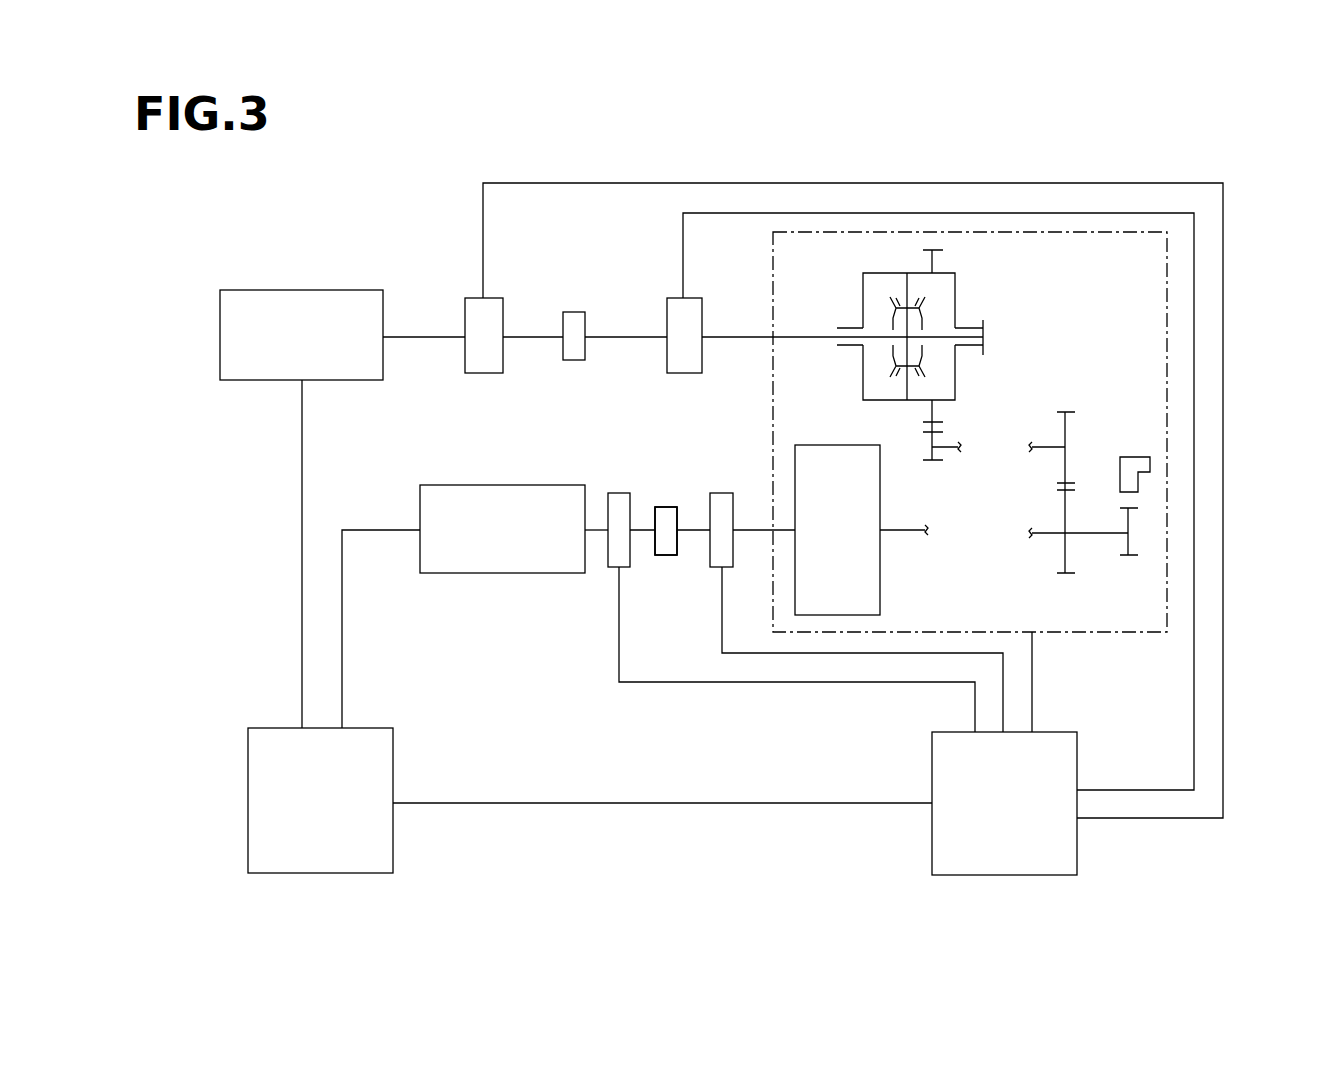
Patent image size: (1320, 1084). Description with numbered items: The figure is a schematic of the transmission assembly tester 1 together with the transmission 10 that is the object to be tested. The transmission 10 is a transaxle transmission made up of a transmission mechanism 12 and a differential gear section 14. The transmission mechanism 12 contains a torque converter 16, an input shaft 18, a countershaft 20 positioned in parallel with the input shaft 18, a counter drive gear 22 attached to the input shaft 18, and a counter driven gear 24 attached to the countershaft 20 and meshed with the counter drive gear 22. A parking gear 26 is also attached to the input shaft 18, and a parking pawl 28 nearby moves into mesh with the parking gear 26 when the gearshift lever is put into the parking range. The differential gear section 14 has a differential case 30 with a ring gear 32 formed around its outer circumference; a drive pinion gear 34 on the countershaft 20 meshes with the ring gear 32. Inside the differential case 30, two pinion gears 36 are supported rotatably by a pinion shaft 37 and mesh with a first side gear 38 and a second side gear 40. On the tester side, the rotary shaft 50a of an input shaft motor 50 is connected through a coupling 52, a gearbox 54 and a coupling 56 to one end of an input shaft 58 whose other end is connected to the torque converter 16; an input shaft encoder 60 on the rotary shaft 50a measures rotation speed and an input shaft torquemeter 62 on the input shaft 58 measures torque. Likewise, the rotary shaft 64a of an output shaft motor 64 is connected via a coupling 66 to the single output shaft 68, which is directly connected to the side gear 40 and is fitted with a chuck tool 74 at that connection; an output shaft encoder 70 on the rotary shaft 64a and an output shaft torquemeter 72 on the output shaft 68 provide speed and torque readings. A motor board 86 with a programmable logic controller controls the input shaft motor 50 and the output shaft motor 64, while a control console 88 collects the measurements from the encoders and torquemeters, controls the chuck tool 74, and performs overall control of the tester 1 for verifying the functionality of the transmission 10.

The transmission assembly tester 1 is at (328, 213).
The transmission 10 is at (1167, 360).
The transmission mechanism 12 is at (1071, 590).
The differential gear section 14 is at (868, 264).
The torque converter 16 is at (882, 572).
The input shaft 18 is at (894, 530).
The countershaft 20 is at (960, 447).
The counter drive gear 22 is at (1070, 578).
The counter driven gear 24 is at (1068, 423).
The parking gear 26 is at (1140, 533).
The parking pawl 28 is at (1152, 462).
The differential case 30 is at (863, 292).
The ring gear 32 is at (936, 256).
The drive pinion gear 34 is at (930, 440).
The pinion gears 36 is at (898, 300).
The pinion shaft 37 is at (922, 350).
The side gear 38 is at (922, 324).
The side gear 40 is at (893, 324).
The input shaft motor 50 is at (463, 606).
The rotary shaft 50a is at (597, 531).
The coupling 52 is at (666, 556).
The gearbox 54 is at (666, 531).
The coupling 56 is at (666, 531).
The input shaft 58 is at (750, 530).
The input shaft encoder 60 is at (620, 492).
The input shaft torquemeter 62 is at (720, 492).
The output shaft motor 64 is at (301, 509).
The rotary shaft 64a is at (420, 336).
The coupling 66 is at (575, 311).
The output shaft 68 is at (740, 336).
The output shaft encoder 70 is at (495, 297).
The output shaft torquemeter 72 is at (672, 297).
The chuck tool 74 is at (986, 345).
The motor board 86 is at (393, 748).
The control console 88 is at (1077, 852).